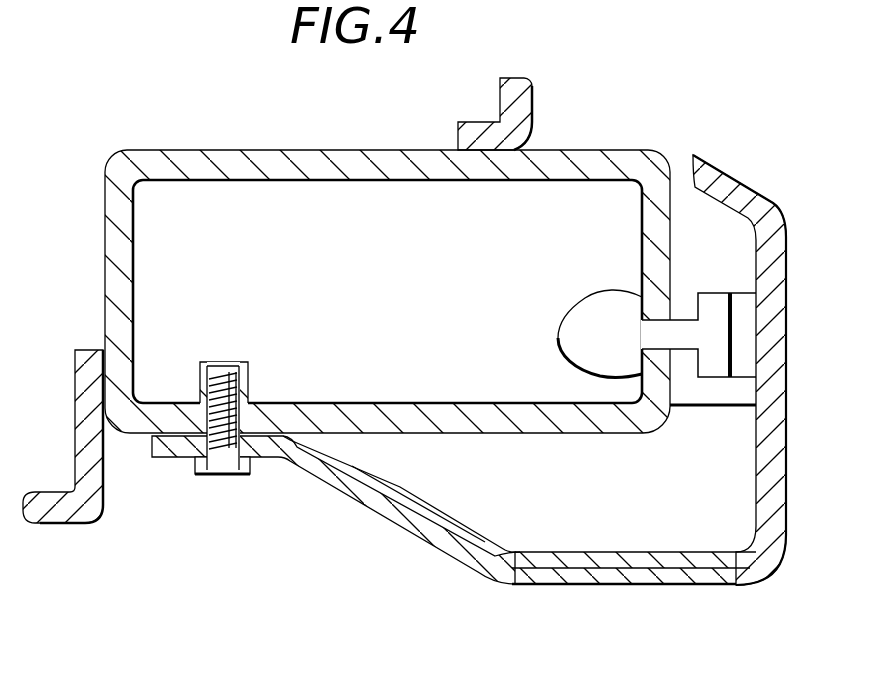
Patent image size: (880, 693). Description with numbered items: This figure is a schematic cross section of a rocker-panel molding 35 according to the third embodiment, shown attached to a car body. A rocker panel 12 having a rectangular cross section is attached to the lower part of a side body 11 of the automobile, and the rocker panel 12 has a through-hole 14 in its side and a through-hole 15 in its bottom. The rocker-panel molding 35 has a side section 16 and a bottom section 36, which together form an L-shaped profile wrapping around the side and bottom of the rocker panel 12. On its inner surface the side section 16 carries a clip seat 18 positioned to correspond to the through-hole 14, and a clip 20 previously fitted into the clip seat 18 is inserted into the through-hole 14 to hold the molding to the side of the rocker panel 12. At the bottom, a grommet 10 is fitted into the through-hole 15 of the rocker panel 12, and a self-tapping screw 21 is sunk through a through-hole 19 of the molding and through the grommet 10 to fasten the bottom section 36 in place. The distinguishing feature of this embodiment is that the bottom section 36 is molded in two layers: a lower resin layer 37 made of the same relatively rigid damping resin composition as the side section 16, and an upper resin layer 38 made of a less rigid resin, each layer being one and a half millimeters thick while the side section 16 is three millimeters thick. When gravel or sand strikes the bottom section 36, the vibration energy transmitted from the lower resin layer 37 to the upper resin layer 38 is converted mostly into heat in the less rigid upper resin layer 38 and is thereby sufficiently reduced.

The grommet 10 is at (250, 366).
The side body 11 is at (531, 106).
The rocker panel 12 is at (305, 150).
The through-hole 14 is at (647, 328).
The through-hole 15 is at (204, 404).
The side section 16 is at (787, 400).
The clip seat 18 is at (722, 407).
The through-hole 19 is at (204, 460).
The clip 20 is at (556, 340).
The self-tapping screw 21 is at (234, 477).
The rocker-panel molding 35 is at (478, 574).
The bottom section 36 is at (634, 610).
The lower resin layer 37 is at (568, 576).
The upper resin layer 38 is at (555, 625).